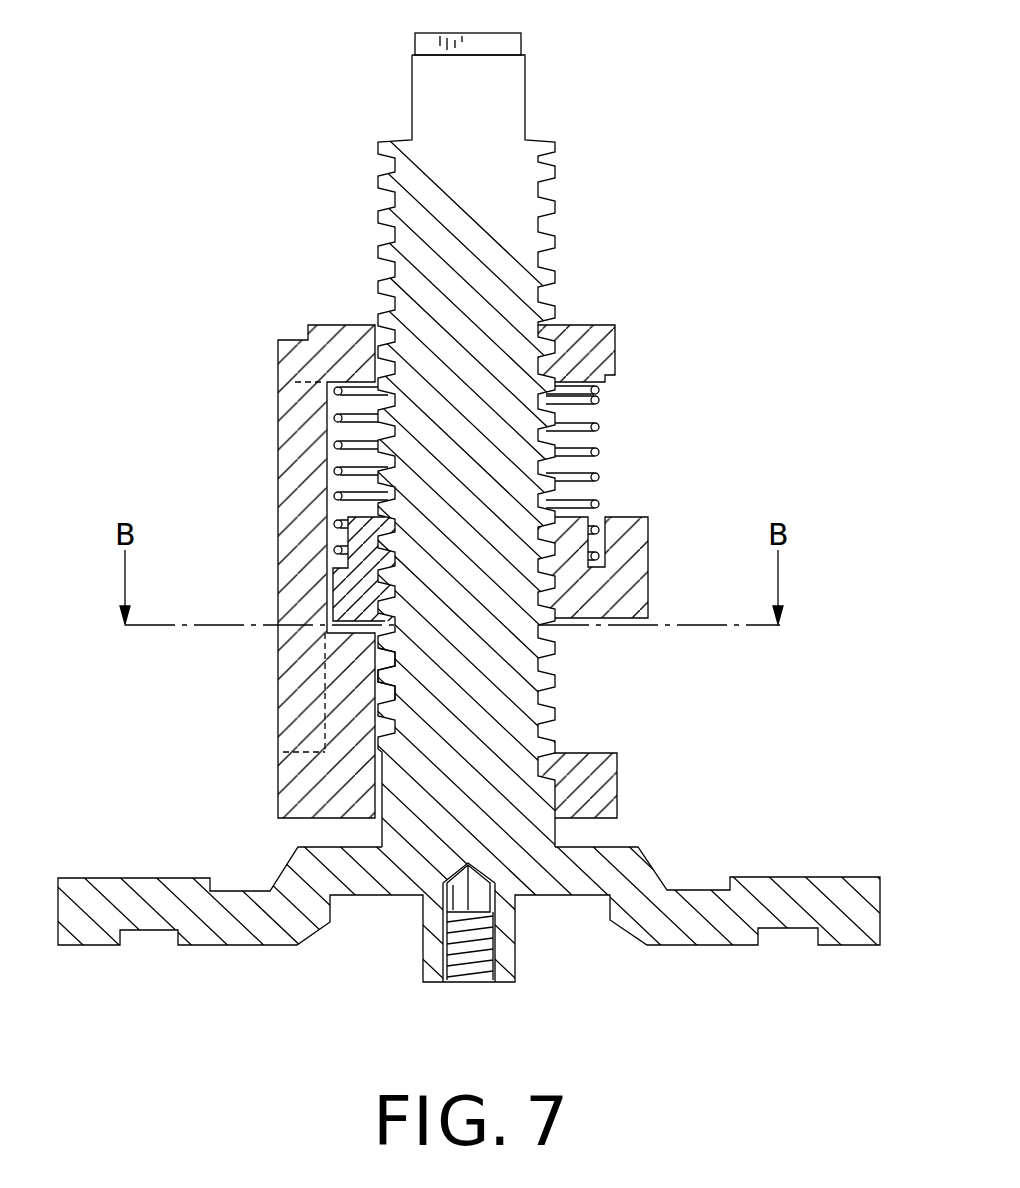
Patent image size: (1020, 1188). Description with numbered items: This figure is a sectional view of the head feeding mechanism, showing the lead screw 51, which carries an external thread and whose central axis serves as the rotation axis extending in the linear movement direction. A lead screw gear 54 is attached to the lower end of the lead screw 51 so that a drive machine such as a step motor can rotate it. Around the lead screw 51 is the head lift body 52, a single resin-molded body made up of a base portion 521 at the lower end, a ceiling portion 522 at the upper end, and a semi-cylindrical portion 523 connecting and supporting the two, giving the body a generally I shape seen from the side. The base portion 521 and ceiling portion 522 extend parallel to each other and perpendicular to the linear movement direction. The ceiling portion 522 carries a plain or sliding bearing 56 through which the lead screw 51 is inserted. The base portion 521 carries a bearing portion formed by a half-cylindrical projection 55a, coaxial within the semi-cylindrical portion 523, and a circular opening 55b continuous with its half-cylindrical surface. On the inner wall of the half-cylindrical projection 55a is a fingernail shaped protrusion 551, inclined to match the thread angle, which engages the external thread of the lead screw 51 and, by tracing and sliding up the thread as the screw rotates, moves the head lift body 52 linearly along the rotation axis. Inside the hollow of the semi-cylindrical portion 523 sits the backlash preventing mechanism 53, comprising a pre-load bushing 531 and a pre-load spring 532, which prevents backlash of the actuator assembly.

The lead screw 51 is at (527, 138).
The head lift body 52 is at (225, 524).
The base portion 521 is at (270, 725).
The ceiling portion 522 is at (340, 330).
The semi-cylindrical portion 523 is at (306, 458).
The backlash preventing mechanism 53 is at (569, 502).
The pre-load bushing 531 is at (620, 514).
The pre-load spring 532 is at (602, 427).
The lead screw gear 54 is at (770, 880).
The half-cylindrical projection 55a is at (345, 660).
The circular opening 55b is at (545, 758).
The protrusion 551 is at (385, 682).
The sliding bearing 56 is at (612, 362).